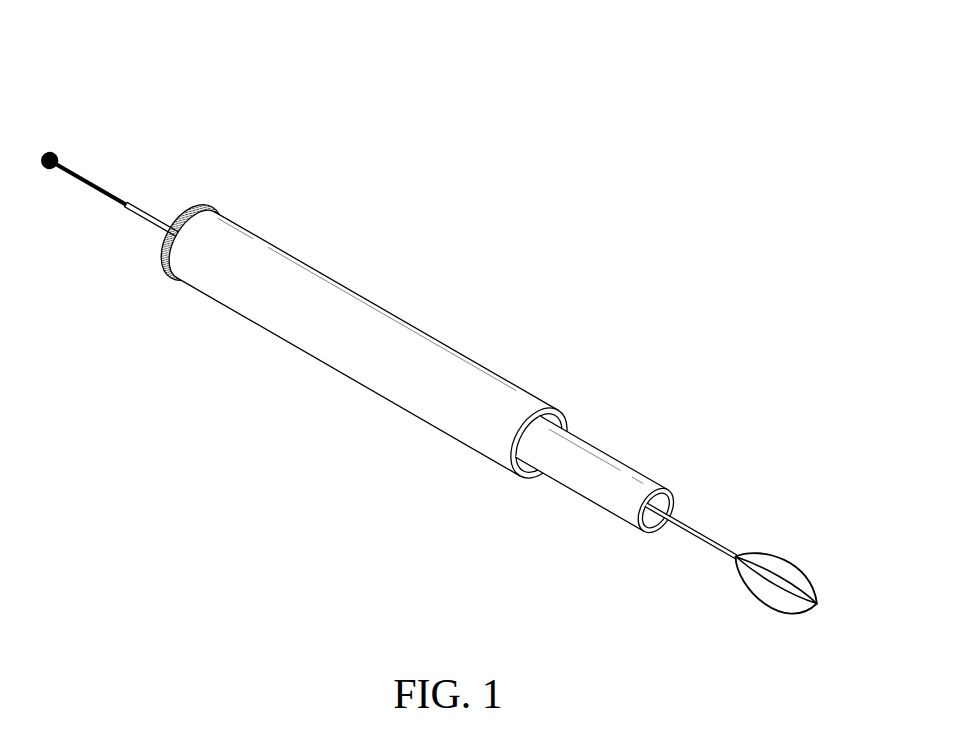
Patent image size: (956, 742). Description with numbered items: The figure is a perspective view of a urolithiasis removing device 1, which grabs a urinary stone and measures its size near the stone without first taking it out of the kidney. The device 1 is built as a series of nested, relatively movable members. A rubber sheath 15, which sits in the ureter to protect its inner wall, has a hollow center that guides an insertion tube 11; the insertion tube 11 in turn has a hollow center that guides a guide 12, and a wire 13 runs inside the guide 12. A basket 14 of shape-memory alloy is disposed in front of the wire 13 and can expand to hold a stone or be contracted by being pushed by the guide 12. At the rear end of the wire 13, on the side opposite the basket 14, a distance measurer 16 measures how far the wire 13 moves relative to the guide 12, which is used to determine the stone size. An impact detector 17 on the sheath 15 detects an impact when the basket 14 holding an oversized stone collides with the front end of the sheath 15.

The urolithiasis removing device 1 is at (447, 354).
The insertion tube 11 is at (610, 458).
The guide 12 is at (697, 532).
The wire 13 is at (87, 185).
The basket 14 is at (787, 550).
The sheath 15 is at (390, 313).
The distance measurer 16 is at (53, 152).
The impact detector 17 is at (206, 207).